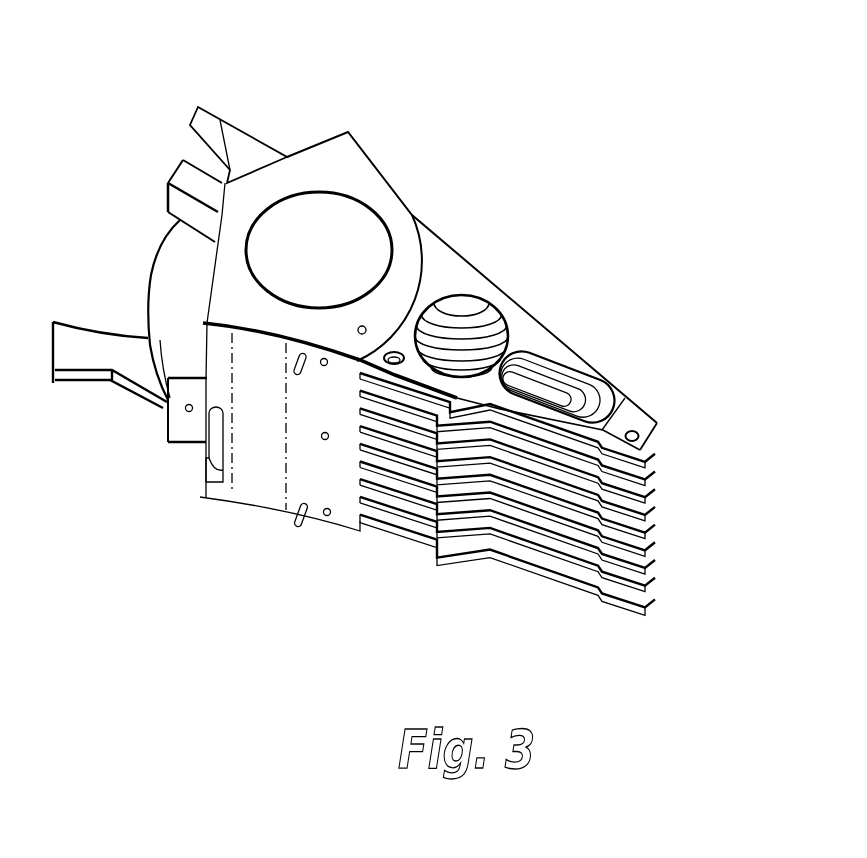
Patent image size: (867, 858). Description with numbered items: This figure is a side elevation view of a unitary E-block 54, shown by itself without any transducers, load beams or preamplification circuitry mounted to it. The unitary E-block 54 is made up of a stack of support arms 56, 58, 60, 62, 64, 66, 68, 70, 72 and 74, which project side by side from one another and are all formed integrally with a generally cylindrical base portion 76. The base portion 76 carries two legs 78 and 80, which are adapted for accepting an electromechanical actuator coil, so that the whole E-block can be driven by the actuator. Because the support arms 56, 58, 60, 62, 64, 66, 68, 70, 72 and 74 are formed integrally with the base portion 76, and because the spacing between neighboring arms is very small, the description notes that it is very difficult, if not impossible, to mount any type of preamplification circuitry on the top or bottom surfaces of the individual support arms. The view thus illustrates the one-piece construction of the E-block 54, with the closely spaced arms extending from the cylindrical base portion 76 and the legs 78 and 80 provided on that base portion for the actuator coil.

The unitary E-block 54 is at (342, 100).
The support arm 56 is at (633, 410).
The support arm 58 is at (658, 433).
The support arm 60 is at (660, 450).
The support arm 62 is at (655, 466).
The support arm 64 is at (657, 486).
The support arm 66 is at (653, 500).
The support arm 68 is at (657, 522).
The support arm 70 is at (655, 540).
The support arm 72 is at (657, 563).
The support arm 74 is at (648, 593).
The base portion 76 is at (360, 178).
The leg 78 is at (220, 128).
The leg 80 is at (72, 366).